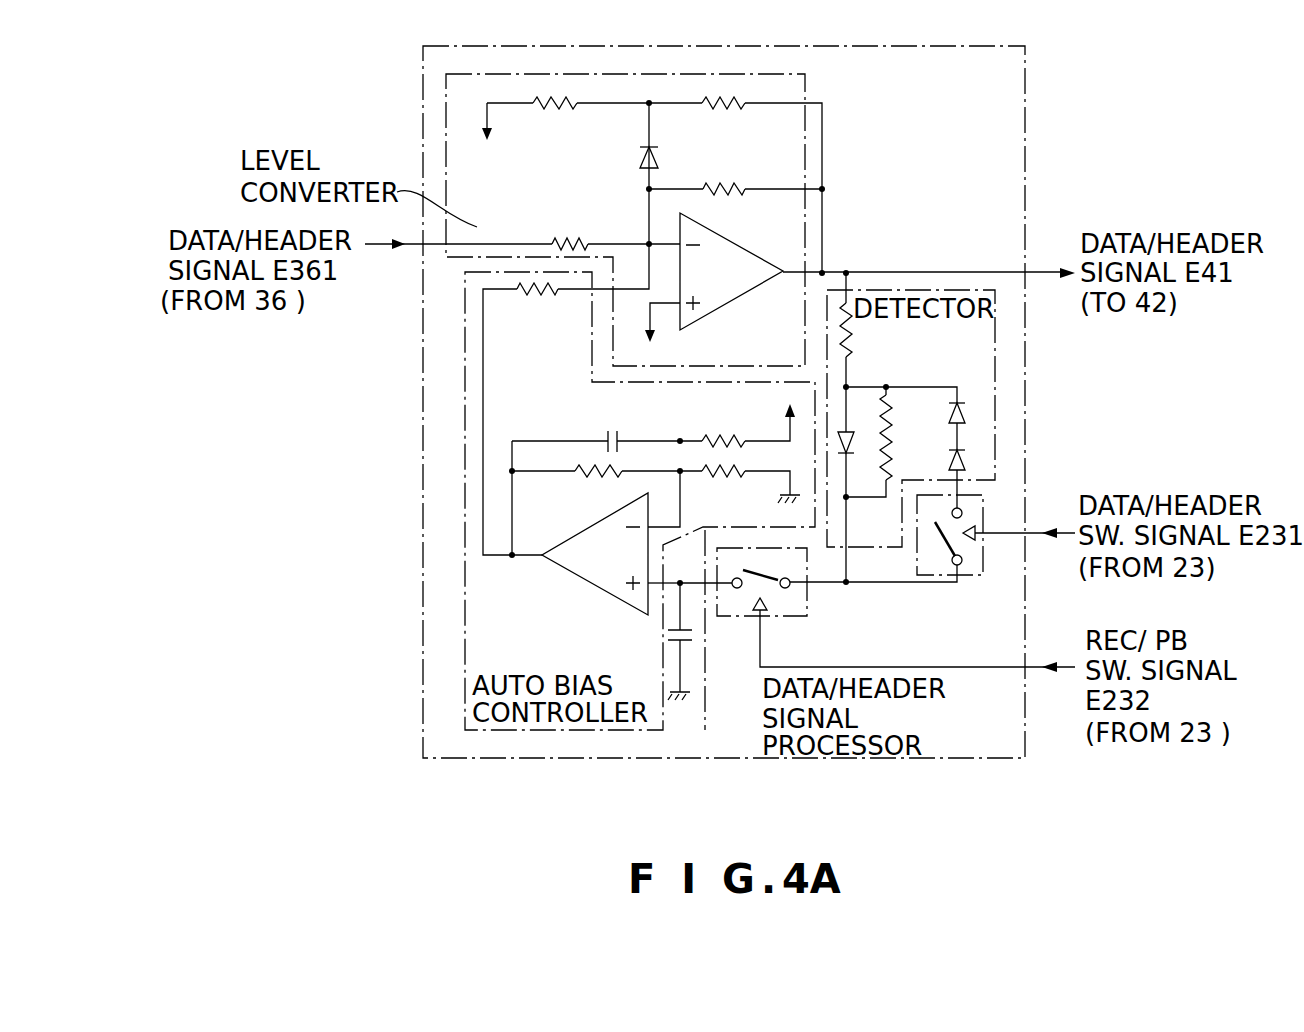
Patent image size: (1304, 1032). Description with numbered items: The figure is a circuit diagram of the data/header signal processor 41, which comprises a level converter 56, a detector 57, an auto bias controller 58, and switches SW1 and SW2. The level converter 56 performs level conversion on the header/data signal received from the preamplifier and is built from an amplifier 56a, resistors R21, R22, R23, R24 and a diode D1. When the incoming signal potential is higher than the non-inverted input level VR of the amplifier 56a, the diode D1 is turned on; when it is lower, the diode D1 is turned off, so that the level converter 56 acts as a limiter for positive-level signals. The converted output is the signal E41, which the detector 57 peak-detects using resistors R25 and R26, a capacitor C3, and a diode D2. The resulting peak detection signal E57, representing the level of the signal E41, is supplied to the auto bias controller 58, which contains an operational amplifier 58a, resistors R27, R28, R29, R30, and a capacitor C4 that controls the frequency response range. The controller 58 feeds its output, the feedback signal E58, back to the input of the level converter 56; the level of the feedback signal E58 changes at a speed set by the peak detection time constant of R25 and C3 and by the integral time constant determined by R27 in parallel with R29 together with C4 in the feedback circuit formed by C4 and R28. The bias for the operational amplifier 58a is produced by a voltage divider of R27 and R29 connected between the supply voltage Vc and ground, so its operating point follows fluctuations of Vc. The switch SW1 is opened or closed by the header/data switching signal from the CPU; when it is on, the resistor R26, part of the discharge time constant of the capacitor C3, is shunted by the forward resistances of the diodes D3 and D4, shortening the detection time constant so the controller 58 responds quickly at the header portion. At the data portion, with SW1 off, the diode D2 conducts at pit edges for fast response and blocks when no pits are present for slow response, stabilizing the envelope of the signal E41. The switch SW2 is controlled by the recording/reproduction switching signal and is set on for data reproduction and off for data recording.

The data/header signal processor 41 is at (943, 758).
The level converter 56 is at (633, 220).
The amplifier 56a is at (748, 253).
The detector 57 is at (957, 429).
The auto bias controller 58 is at (640, 536).
The operational amplifier 58a is at (558, 572).
The resistor R21 is at (570, 236).
The resistor R22 is at (553, 111).
The resistor R23 is at (723, 111).
The resistor R24 is at (726, 182).
The resistor R25 is at (853, 330).
The resistor R26 is at (888, 482).
The resistor R27 is at (722, 434).
The resistor R28 is at (610, 479).
The resistor R29 is at (722, 479).
The resistor R30 is at (540, 297).
The diode D1 is at (640, 158).
The diode D2 is at (858, 442).
The diode D3 is at (949, 408).
The diode D4 is at (949, 450).
The capacitor C3 is at (692, 637).
The capacitor C4 is at (612, 430).
The switch SW1 is at (957, 578).
The switch SW2 is at (807, 616).
The signal E41 is at (846, 272).
The peak detection signal E57 is at (679, 586).
The feedback signal E58 is at (583, 291).